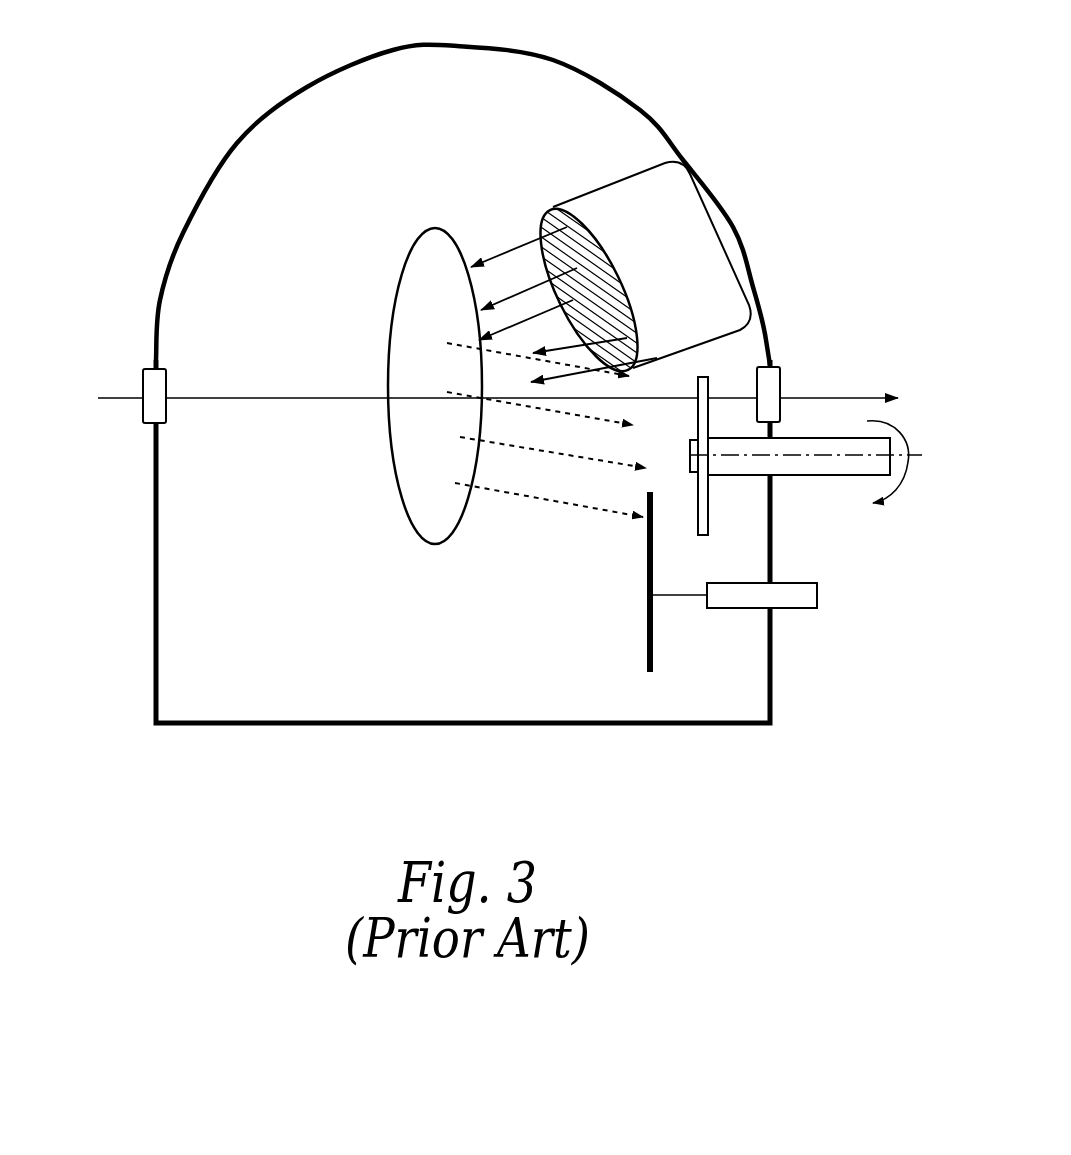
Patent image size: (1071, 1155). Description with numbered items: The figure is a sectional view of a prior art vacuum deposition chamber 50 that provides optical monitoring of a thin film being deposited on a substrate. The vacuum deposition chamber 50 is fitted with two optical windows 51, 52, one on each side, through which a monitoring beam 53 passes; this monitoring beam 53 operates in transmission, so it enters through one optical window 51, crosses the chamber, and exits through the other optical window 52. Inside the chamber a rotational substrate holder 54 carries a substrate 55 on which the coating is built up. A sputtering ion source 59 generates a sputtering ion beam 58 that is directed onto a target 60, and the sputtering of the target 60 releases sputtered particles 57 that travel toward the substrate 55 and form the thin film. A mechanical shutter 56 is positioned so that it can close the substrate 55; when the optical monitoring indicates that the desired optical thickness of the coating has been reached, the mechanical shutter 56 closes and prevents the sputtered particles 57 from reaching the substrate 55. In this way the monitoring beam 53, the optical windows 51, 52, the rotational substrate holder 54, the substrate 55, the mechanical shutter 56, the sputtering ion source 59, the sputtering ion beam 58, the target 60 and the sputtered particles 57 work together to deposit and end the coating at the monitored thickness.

The vacuum deposition chamber 50 is at (641, 110).
The optical window 51 is at (143, 405).
The optical window 52 is at (783, 372).
The monitoring beam 53 is at (285, 402).
The rotational substrate holder 54 is at (838, 477).
The substrate 55 is at (710, 515).
The mechanical shutter 56 is at (647, 623).
The sputtered particles 57 is at (538, 497).
The sputtering ion beam 58 is at (510, 249).
The sputtering ion source 59 is at (685, 282).
The target 60 is at (407, 257).